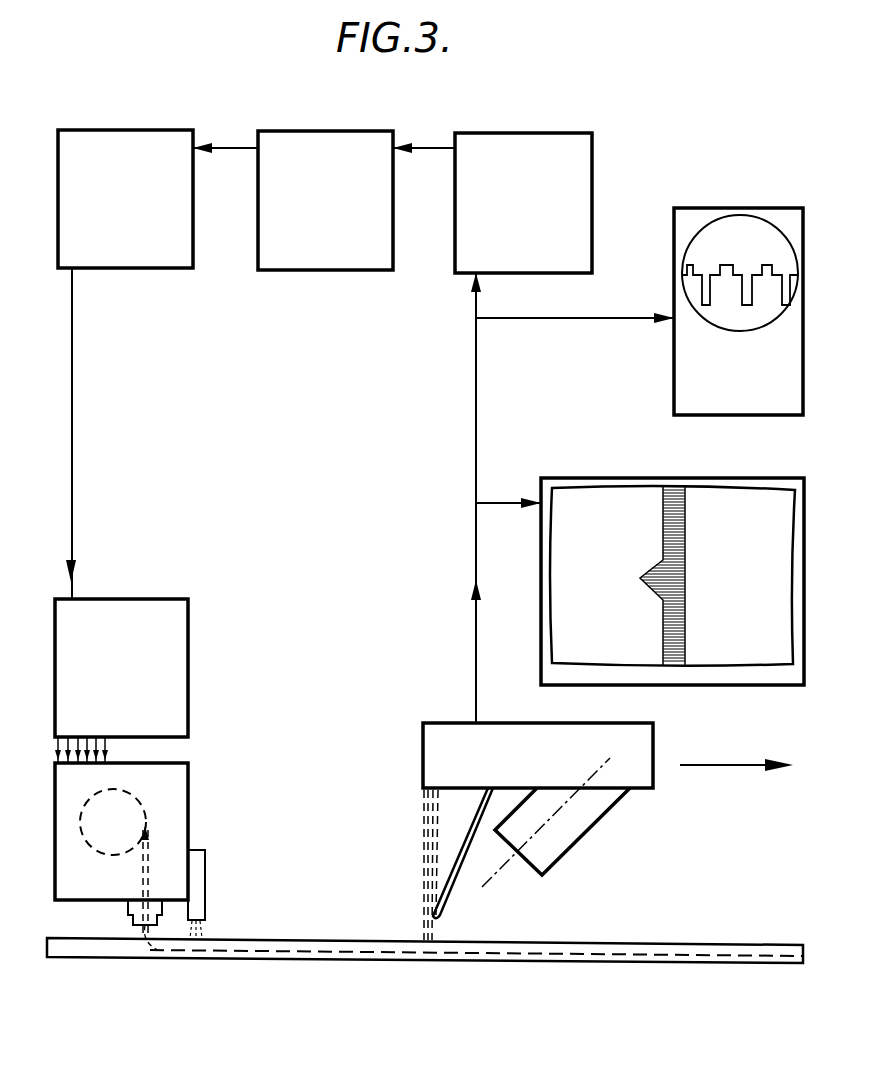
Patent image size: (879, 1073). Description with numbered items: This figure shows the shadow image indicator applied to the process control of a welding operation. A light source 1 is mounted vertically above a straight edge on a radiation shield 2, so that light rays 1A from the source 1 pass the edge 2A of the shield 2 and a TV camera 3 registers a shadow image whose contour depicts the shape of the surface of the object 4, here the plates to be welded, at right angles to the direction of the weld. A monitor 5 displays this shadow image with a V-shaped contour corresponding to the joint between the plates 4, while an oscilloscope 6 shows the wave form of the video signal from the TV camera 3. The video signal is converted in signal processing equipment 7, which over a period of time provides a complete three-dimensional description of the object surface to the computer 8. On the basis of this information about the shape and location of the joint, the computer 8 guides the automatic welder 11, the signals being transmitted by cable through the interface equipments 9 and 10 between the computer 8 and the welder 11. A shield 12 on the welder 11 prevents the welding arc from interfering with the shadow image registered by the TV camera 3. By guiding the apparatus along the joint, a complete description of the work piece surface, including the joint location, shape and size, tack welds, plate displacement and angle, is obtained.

The light source 1 is at (430, 730).
The light beams 1A is at (412, 865).
The radiation shield 2 is at (463, 848).
The mirror tip 2A is at (436, 918).
The TV camera 3 is at (592, 818).
The object 4 is at (366, 912).
The monitor 5 is at (550, 685).
The oscilloscope 6 is at (680, 400).
The signal processing equipment 7 is at (575, 263).
The computer 8 is at (380, 262).
The interface equipment 9 is at (193, 264).
The interface equipment 10 is at (178, 658).
The automatic welder 11 is at (175, 807).
The shield 12 is at (206, 910).